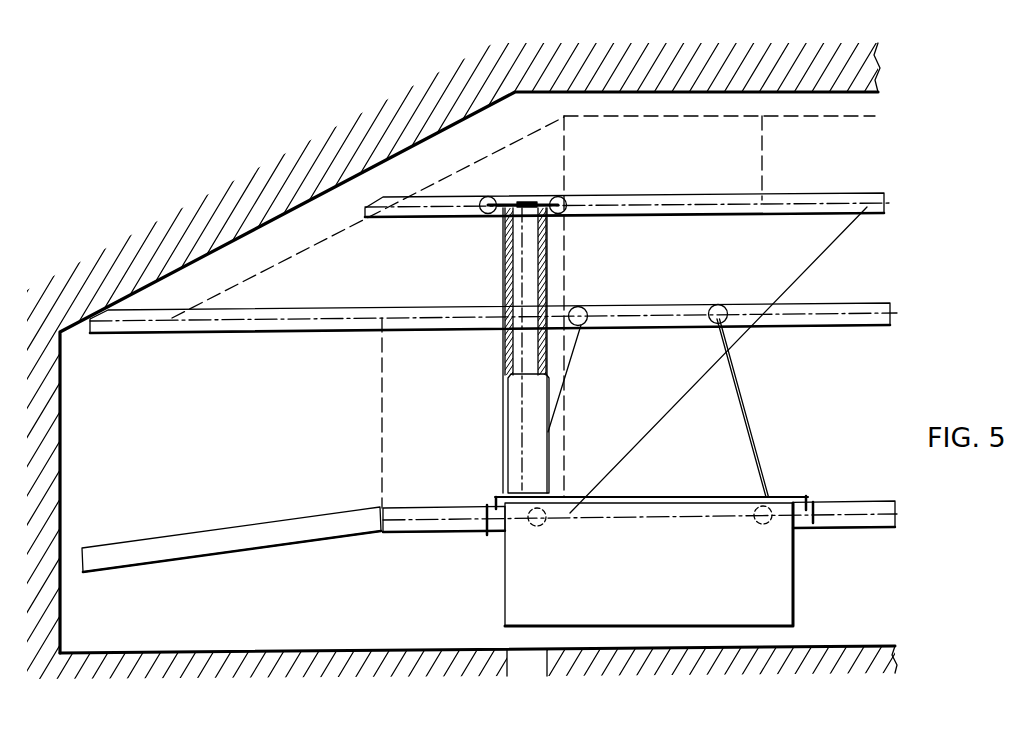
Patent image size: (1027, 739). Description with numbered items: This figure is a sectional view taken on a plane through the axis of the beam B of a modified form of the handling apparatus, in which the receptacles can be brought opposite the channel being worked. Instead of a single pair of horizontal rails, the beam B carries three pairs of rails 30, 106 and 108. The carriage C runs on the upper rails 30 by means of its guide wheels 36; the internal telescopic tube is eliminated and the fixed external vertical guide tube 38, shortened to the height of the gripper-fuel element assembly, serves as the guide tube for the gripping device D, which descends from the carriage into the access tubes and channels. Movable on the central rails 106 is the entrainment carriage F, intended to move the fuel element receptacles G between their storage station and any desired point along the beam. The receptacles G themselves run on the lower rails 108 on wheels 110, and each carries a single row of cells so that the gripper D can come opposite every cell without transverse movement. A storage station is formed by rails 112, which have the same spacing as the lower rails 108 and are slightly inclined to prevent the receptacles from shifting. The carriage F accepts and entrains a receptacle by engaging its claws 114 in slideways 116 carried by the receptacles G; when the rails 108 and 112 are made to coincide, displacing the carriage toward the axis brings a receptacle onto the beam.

The horizontal guide rails 30 is at (587, 205).
The guide wheels 36 is at (488, 197).
The vertical guide tube 38 is at (503, 254).
The central rails 106 is at (307, 311).
The lower rails 108 is at (437, 518).
The wheels 110 is at (546, 518).
The rails 112 is at (221, 538).
The claws 114 is at (492, 497).
The slideways 116 is at (487, 526).
The beam B is at (675, 168).
The carriage C is at (528, 202).
The gripping device D is at (522, 407).
The entrainment carriage F is at (648, 306).
The fuel element receptacles G is at (629, 568).